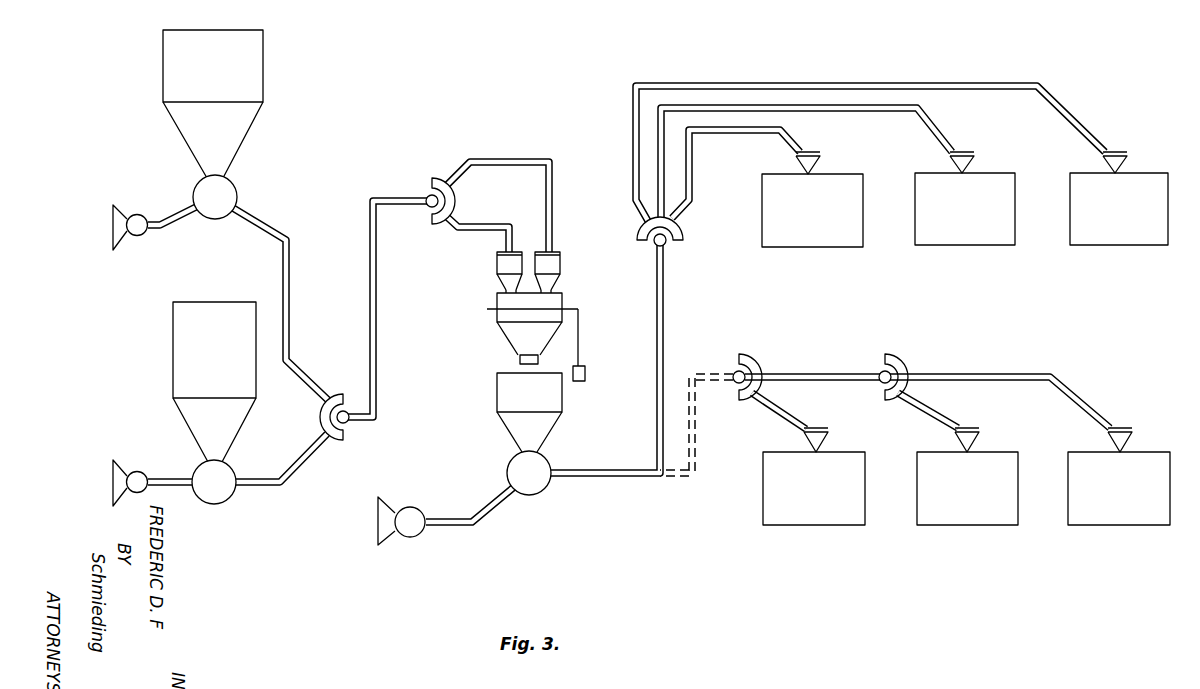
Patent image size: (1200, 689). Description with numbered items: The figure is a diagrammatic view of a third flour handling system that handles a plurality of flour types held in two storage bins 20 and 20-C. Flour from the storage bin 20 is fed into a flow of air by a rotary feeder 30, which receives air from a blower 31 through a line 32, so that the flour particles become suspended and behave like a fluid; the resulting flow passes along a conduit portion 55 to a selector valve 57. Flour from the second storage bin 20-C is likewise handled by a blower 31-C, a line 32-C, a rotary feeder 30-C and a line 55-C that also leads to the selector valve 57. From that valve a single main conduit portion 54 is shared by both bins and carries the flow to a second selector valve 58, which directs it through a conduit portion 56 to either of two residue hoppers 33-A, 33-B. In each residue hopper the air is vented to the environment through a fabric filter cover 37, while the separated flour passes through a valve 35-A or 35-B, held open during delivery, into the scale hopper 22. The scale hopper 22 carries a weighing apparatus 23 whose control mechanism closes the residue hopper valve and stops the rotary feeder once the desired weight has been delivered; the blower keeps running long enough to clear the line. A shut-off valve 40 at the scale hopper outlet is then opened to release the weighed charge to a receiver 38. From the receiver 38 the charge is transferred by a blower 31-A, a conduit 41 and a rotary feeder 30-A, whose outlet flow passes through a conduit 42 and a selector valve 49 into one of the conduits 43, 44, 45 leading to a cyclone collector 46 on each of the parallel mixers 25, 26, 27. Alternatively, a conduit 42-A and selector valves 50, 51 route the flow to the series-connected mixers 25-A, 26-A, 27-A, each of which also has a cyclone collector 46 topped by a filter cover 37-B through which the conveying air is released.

The storage bin 20 is at (258, 82).
The storage bin 20-C is at (175, 330).
The scale hopper 22 is at (496, 340).
The weighing apparatus 23 is at (579, 360).
The mixer 25 is at (792, 244).
The mixer 26 is at (946, 243).
The mixer 27 is at (1100, 243).
The mixer 25-A is at (780, 522).
The mixer 26-A is at (940, 522).
The mixer 27-A is at (1090, 522).
The rotary feeder 30 is at (226, 194).
The rotary feeder 30-A is at (514, 470).
The rotary feeder 30-C is at (230, 488).
The blower 31 is at (140, 214).
The blower 31-A is at (412, 536).
The blower 31-C is at (140, 470).
The line 32 is at (160, 226).
The line 32-C is at (186, 486).
The residue hopper 33-A is at (500, 264).
The residue hopper 33-B is at (556, 264).
The valve 35-A is at (506, 290).
The valve 35-B is at (551, 290).
The filter cover 37 is at (515, 246).
The filter cover 37-B is at (1112, 148).
The receiver 38 is at (550, 403).
The shut-off valve 40 is at (520, 360).
The conduit 41 is at (492, 510).
The conduit 42 is at (600, 478).
The conduit 42-A is at (696, 410).
The conduit 43 is at (760, 85).
The conduit 44 is at (858, 112).
The conduit 45 is at (705, 135).
The cyclone collector 46 is at (818, 166).
The selector valve 49 is at (683, 232).
The selector valve 50 is at (757, 365).
The selector valve 51 is at (903, 365).
The main conduit portion 54 is at (370, 266).
The conduit portion 55 is at (289, 268).
The line 55-C is at (275, 478).
The conduit portion 56 is at (510, 160).
The selector valve 57 is at (340, 395).
The selector valve 58 is at (425, 182).